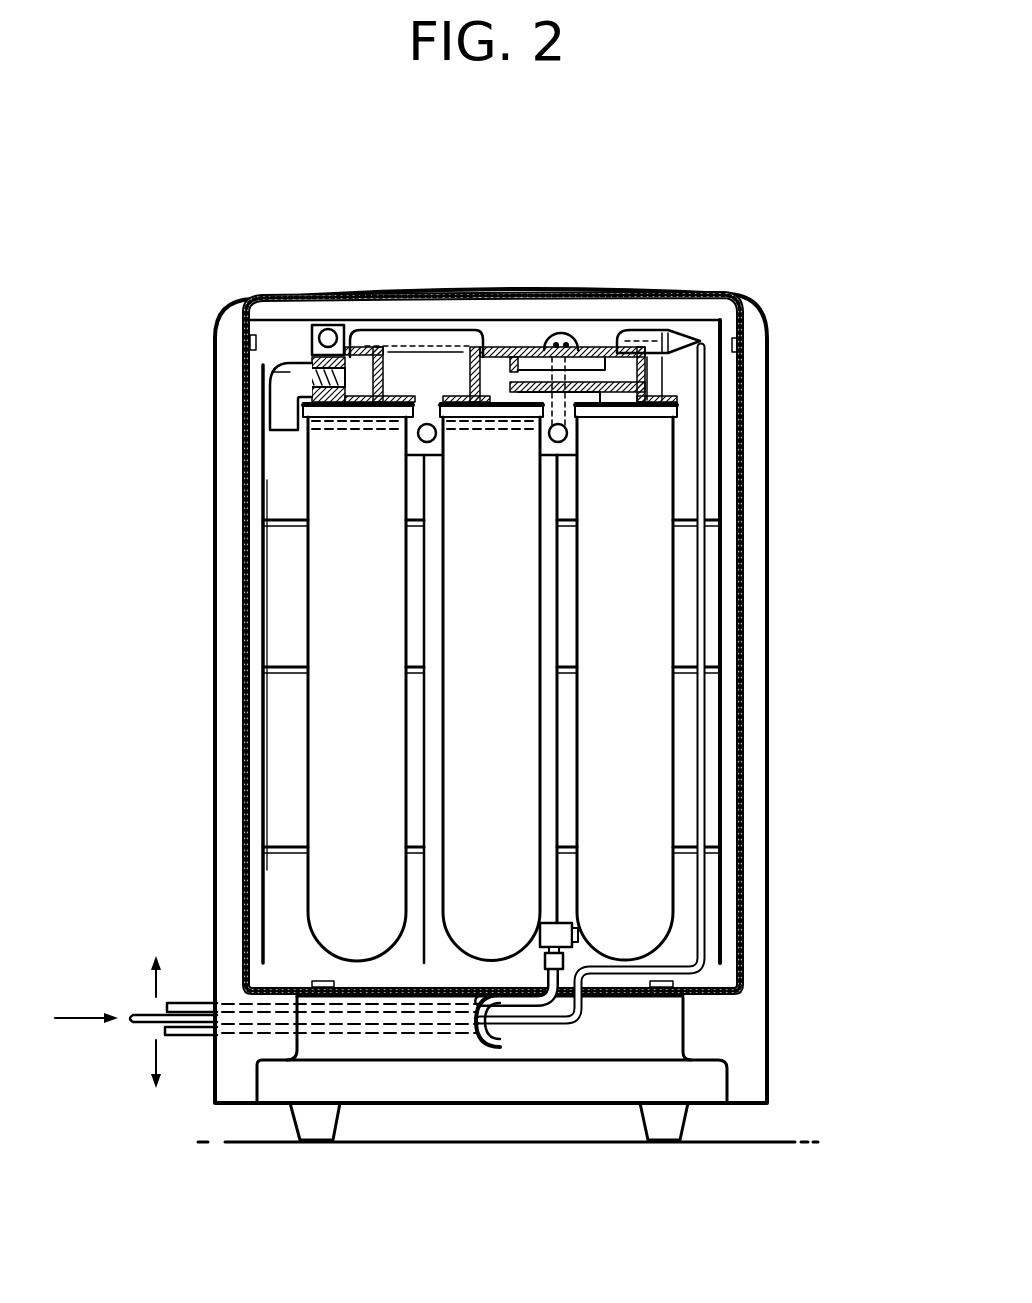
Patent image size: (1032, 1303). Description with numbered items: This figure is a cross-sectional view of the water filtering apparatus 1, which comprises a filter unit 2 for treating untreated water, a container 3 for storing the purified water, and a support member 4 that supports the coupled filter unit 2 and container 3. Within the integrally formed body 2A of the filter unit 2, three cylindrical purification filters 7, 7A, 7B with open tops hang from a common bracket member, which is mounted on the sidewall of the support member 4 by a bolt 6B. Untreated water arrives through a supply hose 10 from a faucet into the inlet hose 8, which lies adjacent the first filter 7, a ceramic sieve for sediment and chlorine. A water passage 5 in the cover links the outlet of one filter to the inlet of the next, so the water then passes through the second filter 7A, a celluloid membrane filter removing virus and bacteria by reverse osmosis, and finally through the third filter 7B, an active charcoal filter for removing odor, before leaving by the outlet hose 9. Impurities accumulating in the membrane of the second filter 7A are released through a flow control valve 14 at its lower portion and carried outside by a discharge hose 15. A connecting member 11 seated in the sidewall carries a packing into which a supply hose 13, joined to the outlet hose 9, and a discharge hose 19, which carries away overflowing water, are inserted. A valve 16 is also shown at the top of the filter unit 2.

The water filtering apparatus 1 is at (772, 288).
The filter unit 2 is at (752, 632).
The body 2A is at (743, 580).
The container 3 is at (782, 412).
The support member 4 is at (776, 1009).
The water passage 5 is at (437, 340).
The bolt 6B is at (329, 338).
The first filter 7 is at (645, 765).
The second filter 7A is at (457, 755).
The third filter 7B is at (325, 631).
The inlet hose 8 is at (648, 337).
The outlet hose 9 is at (298, 363).
The supply hose 10 is at (128, 1025).
The connecting member 11 is at (622, 305).
The supply hose 13 is at (288, 426).
The flow control valve 14 is at (560, 932).
The discharge hose 15 is at (182, 1003).
The valve 16 is at (560, 330).
The discharge hose 19 is at (196, 1033).